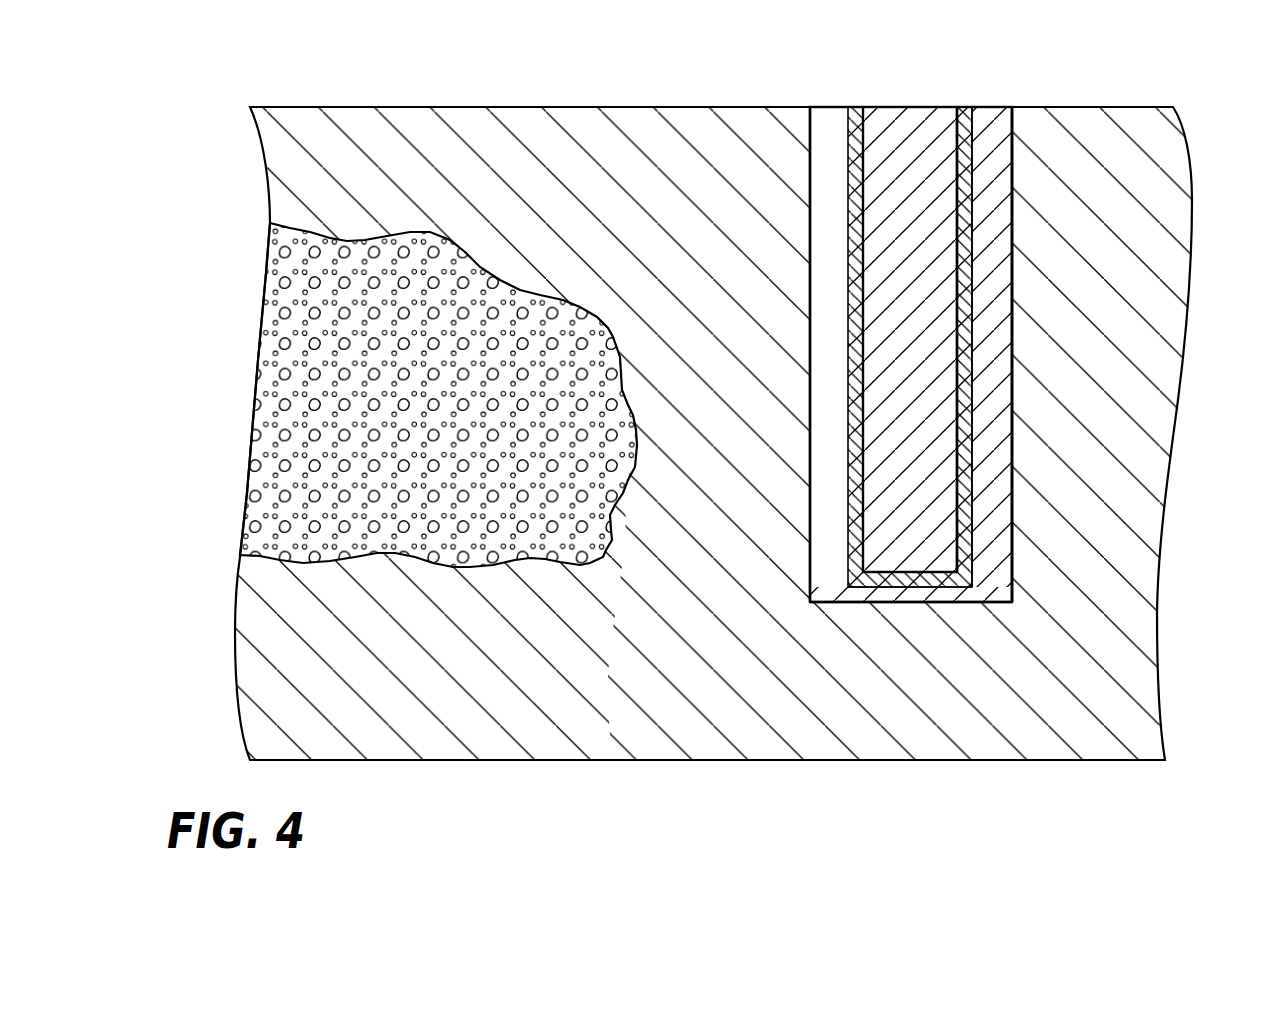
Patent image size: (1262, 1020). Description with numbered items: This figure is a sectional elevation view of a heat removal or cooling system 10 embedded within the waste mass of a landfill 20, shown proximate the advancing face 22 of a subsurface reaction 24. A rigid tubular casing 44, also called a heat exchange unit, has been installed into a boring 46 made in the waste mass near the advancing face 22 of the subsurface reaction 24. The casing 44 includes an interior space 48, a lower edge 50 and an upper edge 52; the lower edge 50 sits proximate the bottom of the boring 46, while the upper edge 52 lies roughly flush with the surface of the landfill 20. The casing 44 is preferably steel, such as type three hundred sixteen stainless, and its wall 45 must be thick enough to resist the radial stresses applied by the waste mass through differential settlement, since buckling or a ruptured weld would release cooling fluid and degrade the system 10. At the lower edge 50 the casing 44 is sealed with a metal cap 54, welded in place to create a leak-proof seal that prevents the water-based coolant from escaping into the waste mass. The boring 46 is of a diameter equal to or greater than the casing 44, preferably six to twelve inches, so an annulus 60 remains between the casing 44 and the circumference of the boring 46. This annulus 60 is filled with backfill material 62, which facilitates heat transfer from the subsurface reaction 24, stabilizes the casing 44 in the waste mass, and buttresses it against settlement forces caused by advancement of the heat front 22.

The cooling system 10 is at (982, 61).
The landfill 20 is at (405, 155).
The advancing face 22 is at (625, 500).
The subsurface reaction 24 is at (337, 330).
The rigid tubular casing 44 is at (975, 140).
The wall 45 is at (973, 421).
The boring 46 is at (1012, 258).
The interior space 48 is at (897, 155).
The lower edge 50 is at (1010, 585).
The upper edge 52 is at (857, 105).
The metal cap 54 is at (930, 587).
The annulus 60 is at (830, 105).
The backfill material 62 is at (1000, 307).